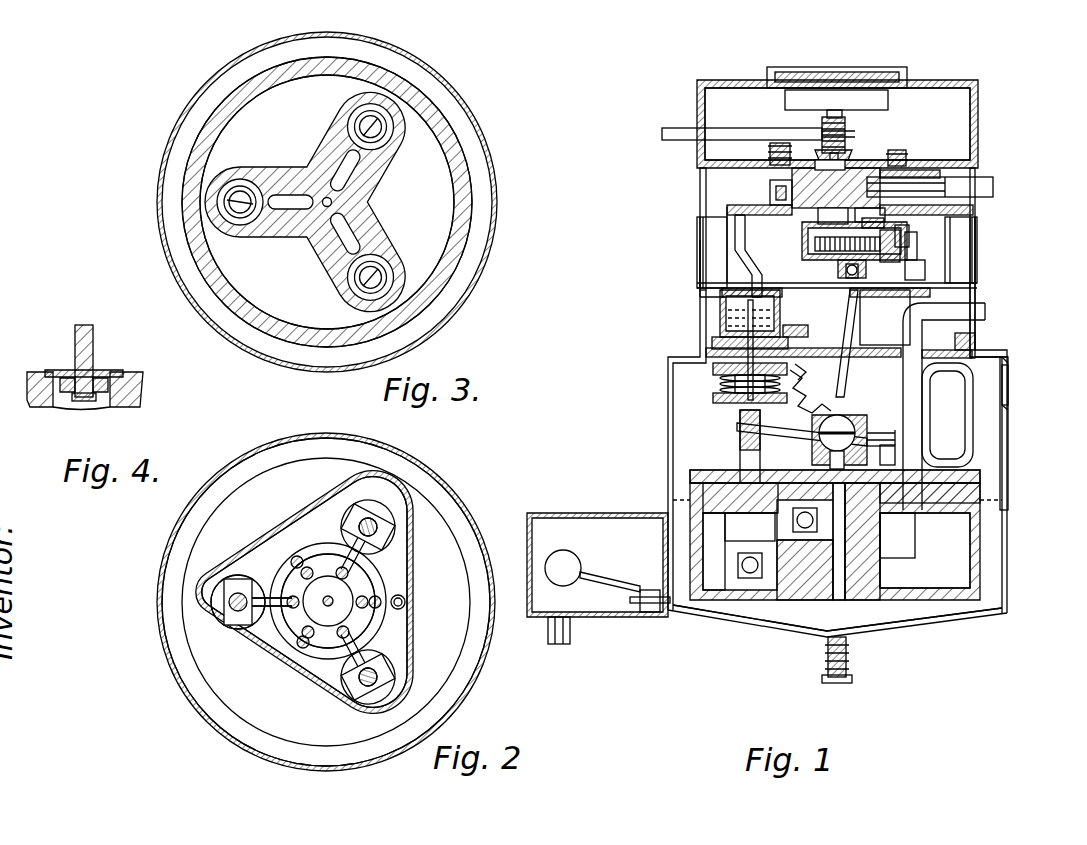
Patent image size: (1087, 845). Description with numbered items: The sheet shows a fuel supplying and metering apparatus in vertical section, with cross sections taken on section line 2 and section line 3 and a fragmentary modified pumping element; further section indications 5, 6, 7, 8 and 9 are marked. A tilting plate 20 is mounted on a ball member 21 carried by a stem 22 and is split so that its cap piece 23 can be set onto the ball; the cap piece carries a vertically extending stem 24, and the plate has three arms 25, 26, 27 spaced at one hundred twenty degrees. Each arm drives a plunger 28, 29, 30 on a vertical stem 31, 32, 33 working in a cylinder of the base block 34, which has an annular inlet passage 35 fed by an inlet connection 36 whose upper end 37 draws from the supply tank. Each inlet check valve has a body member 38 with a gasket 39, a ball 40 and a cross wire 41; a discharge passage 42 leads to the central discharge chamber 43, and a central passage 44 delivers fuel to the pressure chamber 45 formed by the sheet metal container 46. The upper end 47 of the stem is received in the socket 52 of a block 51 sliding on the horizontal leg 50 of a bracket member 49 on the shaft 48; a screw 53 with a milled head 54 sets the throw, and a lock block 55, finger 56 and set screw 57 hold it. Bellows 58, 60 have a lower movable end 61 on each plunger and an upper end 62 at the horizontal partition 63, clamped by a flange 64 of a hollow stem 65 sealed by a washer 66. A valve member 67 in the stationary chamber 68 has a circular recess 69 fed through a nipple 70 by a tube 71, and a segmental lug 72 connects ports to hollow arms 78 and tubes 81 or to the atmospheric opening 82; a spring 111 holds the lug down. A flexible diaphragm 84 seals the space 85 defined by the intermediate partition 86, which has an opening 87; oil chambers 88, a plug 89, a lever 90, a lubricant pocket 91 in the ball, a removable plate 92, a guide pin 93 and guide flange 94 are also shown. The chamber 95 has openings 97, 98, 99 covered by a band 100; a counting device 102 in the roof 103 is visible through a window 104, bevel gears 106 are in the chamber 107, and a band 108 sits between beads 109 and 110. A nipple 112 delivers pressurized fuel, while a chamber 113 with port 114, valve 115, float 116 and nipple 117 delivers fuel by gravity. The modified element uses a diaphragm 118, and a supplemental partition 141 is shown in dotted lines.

In FIG. 1, the section line 2— 2 is at (630, 408).
In FIG. 1, the section line 3— 3 is at (653, 546).
In FIG. 1, the section line 5- 5 is at (648, 506).
In FIG. 1, the section line 6- 6 is at (645, 337).
In FIG. 1, the section line 7- 7 is at (668, 282).
In FIG. 1, the section line 8- 8 is at (776, 202).
In FIG. 1, the section line 9- 9 is at (710, 415).
In FIG. 1, the tilting plate 20 is at (815, 457).
In FIG. 1, the ball member 21 is at (872, 441).
In FIG. 1, the stem 22 is at (830, 457).
In FIG. 2, the cap piece 23 is at (342, 590).
In FIG. 1, the cap piece 23 is at (865, 435).
In FIG. 2, the vertically extending stem 24 is at (329, 606).
In FIG. 1, the vertically extending stem 24 is at (940, 396).
In FIG. 2, the arm 25 is at (270, 610).
In FIG. 1, the arm 25 is at (662, 134).
In FIG. 2, the arm 26 is at (362, 640).
In FIG. 2, the arm 27 is at (346, 556).
In FIG. 1, the arm 27 is at (897, 453).
In FIG. 2, the plunger 28 is at (222, 608).
In FIG. 1, the plunger 28 is at (735, 492).
In FIG. 2, the plunger 29 is at (386, 685).
In FIG. 2, the plunger 30 is at (381, 530).
In FIG. 4, the vertical stem 31 is at (94, 354).
In FIG. 2, the vertical stem 31 is at (230, 603).
In FIG. 1, the vertical stem 31 is at (740, 470).
In FIG. 2, the vertical stem 32 is at (369, 688).
In FIG. 2, the vertical stem 33 is at (374, 523).
In FIG. 1, the vertical stem 33 is at (870, 450).
In FIG. 3, the base block 34 is at (269, 341).
In FIG. 4, the base block 34 is at (148, 407).
In FIG. 2, the base block 34 is at (277, 671).
In FIG. 1, the base block 34 is at (786, 609).
In FIG. 3, the annular inlet passage 35 is at (212, 243).
In FIG. 1, the annular inlet passage 35 is at (945, 566).
In FIG. 2, the inlet connection 36 is at (406, 602).
In FIG. 1, the inlet connection 36 is at (980, 477).
In FIG. 1, the upper end of inlet connection 37 is at (985, 311).
In FIG. 3, the body member 38 is at (392, 112).
In FIG. 1, the body member 38 is at (738, 578).
In FIG. 1, the gasket 39 is at (718, 575).
In FIG. 3, the ball 40 is at (376, 125).
In FIG. 1, the ball 40 is at (750, 575).
In FIG. 3, the cross wire 41 is at (377, 111).
In FIG. 1, the cross wire 41 is at (722, 541).
In FIG. 3, the discharge passage 42 is at (346, 160).
In FIG. 1, the discharge passage 42 is at (803, 612).
In FIG. 1, the central discharge chamber 43 is at (856, 522).
In FIG. 3, the central passage 44 is at (333, 201).
In FIG. 1, the central passage 44 is at (830, 592).
In FIG. 3, the pressure chamber 45 is at (485, 217).
In FIG. 2, the pressure chamber 45 is at (277, 751).
In FIG. 1, the pressure chamber 45 is at (920, 623).
In FIG. 3, the sheet metal container 46 is at (324, 368).
In FIG. 2, the sheet metal container 46 is at (482, 680).
In FIG. 1, the sheet metal container 46 is at (958, 621).
In FIG. 1, the upper end of stem 47 is at (925, 268).
In FIG. 1, the shaft 48 is at (852, 151).
In FIG. 1, the bracket member 49 is at (742, 240).
In FIG. 1, the horizontal leg 50 is at (838, 265).
In FIG. 1, the block 51 is at (912, 256).
In FIG. 1, the socket 52 is at (850, 272).
In FIG. 1, the screw 53 is at (802, 248).
In FIG. 1, the milled head 54 is at (900, 242).
In FIG. 1, the lock block 55 is at (905, 216).
In FIG. 1, the finger 56 is at (893, 238).
In FIG. 1, the set screw 57 is at (880, 218).
In FIG. 1, the bellows 58 is at (713, 398).
In FIG. 1, the bellows 60 is at (1008, 392).
In FIG. 1, the lower movable end of bellows 61 is at (716, 403).
In FIG. 1, the upper end of bellows 62 is at (715, 367).
In FIG. 1, the horizontal partition 63 is at (975, 350).
In FIG. 1, the flange 64 is at (713, 394).
In FIG. 1, the hollow stem 65 is at (720, 343).
In FIG. 1, the washer 66 is at (718, 351).
In FIG. 1, the valve member 67 is at (775, 195).
In FIG. 1, the stationary chamber 68 is at (776, 185).
In FIG. 1, the circular recess 69 is at (790, 180).
In FIG. 1, the nipple 70 is at (935, 175).
In FIG. 1, the tube 71 is at (985, 188).
In FIG. 1, the segmental lug 72 is at (800, 220).
In FIG. 1, the hollow arm 78 is at (750, 207).
In FIG. 1, the tube 81 is at (742, 252).
In FIG. 1, the opening 82 is at (892, 165).
In FIG. 1, the flexible diaphragm 84 is at (826, 405).
In FIG. 2, the sealed space 85 is at (404, 558).
In FIG. 1, the sealed space 85 is at (700, 446).
In FIG. 2, the intermediate partition 86 is at (414, 656).
In FIG. 1, the intermediate partition 86 is at (700, 433).
In FIG. 1, the opening 87 is at (713, 379).
In FIG. 1, the oil chamber 88 is at (716, 320).
In FIG. 1, the plug 89 is at (794, 331).
In FIG. 1, the lever 90 is at (840, 396).
In FIG. 1, the pocket 91 is at (738, 428).
In FIG. 2, the plate 92 is at (286, 575).
In FIG. 1, the plate 92 is at (876, 516).
In FIG. 1, the guide pin 93 is at (720, 326).
In FIG. 1, the guide flange 94 is at (820, 380).
In FIG. 1, the chamber 95 is at (700, 304).
In FIG. 1, the opening 97 is at (958, 226).
In FIG. 1, the opening 98 is at (725, 268).
In FIG. 1, the opening 99 is at (715, 226).
In FIG. 1, the flexible metal band 100 is at (700, 246).
In FIG. 1, the counting device 102 is at (880, 100).
In FIG. 1, the roof 103 is at (935, 80).
In FIG. 1, the window 104 is at (830, 72).
In FIG. 1, the bevel gears 106 is at (845, 138).
In FIG. 1, the chamber 107 is at (735, 100).
In FIG. 1, the band 108 is at (1042, 381).
In FIG. 1, the bead 109 is at (1008, 406).
In FIG. 1, the bead 110 is at (1008, 366).
In FIG. 1, the spring 111 is at (770, 151).
In FIG. 1, the nipple 112 is at (850, 662).
In FIG. 1, the chamber 113 is at (563, 535).
In FIG. 1, the port 114 is at (668, 612).
In FIG. 1, the valve 115 is at (641, 603).
In FIG. 1, the float 116 is at (560, 575).
In FIG. 1, the nipple 117 is at (567, 645).
In FIG. 4, the flexible diaphragm 118 is at (64, 396).
In FIG. 1, the supplemental partition 141 is at (680, 490).